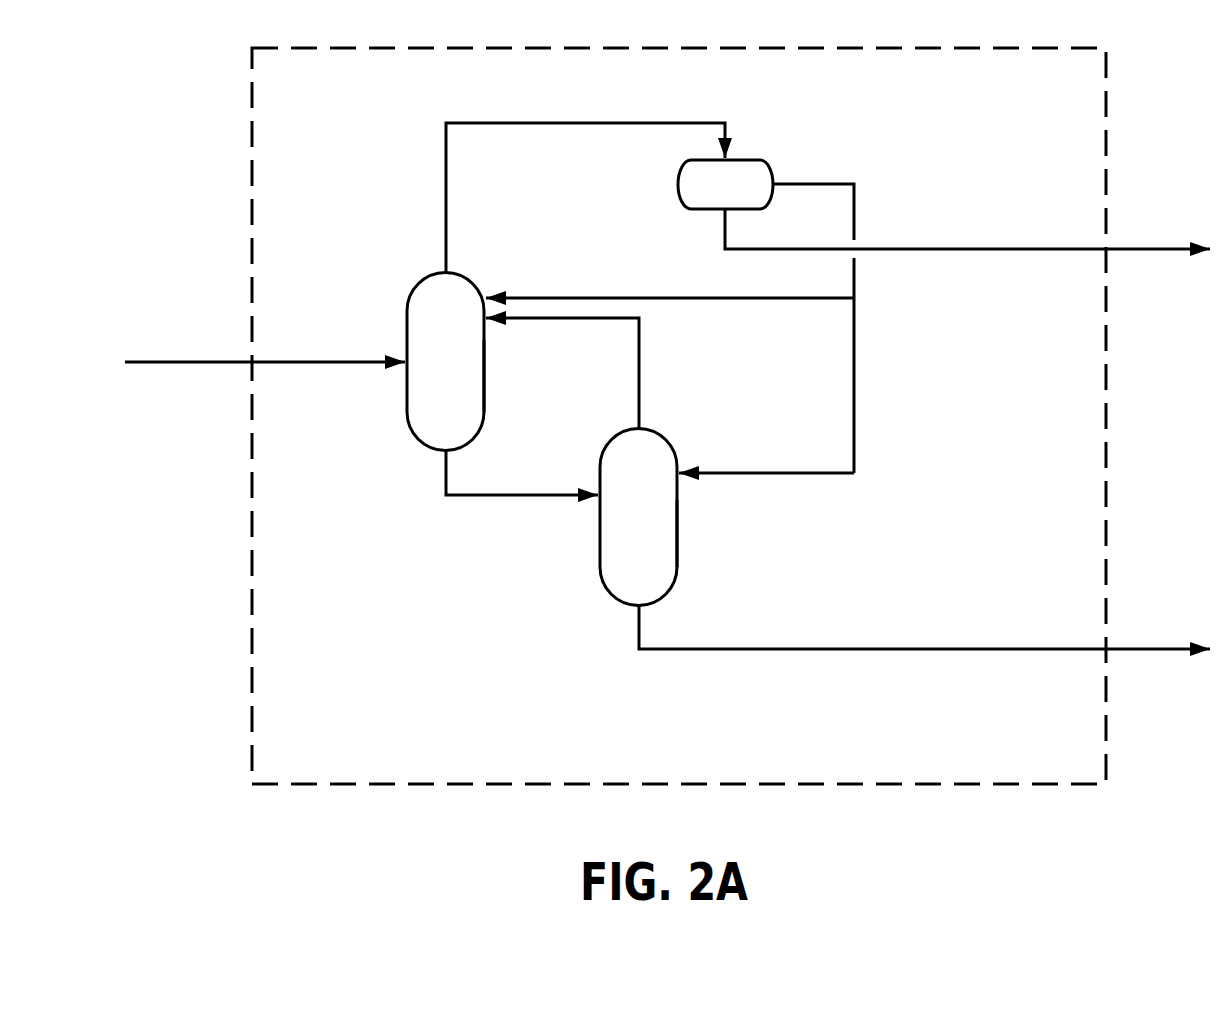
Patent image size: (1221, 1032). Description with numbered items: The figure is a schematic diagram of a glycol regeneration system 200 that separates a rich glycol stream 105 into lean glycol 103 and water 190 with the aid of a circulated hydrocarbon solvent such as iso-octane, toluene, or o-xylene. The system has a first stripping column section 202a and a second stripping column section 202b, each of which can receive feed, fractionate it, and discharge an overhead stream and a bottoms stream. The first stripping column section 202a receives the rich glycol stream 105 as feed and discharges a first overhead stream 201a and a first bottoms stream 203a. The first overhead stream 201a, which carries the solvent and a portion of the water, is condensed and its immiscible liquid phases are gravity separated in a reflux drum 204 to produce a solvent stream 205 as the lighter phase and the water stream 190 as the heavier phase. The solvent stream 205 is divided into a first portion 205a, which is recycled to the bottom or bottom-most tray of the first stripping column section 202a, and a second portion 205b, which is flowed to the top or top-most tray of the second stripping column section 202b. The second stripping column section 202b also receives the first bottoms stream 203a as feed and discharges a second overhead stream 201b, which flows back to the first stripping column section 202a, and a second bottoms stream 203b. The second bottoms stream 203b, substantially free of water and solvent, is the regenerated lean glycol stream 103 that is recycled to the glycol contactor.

The glycol regeneration system 200 is at (1013, 794).
The first overhead stream 201a is at (447, 261).
The second overhead stream 201b is at (640, 412).
The first stripping column section 202a is at (484, 386).
The second stripping column section 202b is at (677, 548).
The first bottoms stream 203a is at (447, 478).
The second bottoms stream 203b is at (640, 635).
The reflux drum 204 is at (773, 175).
The solvent stream 205 is at (855, 209).
The first portion of the solvent stream 205a is at (695, 298).
The second portion of the solvent stream 205b is at (829, 473).
The rich glycol stream 105 is at (170, 362).
The water stream 190 is at (1133, 250).
The lean glycol stream 103 is at (1133, 649).